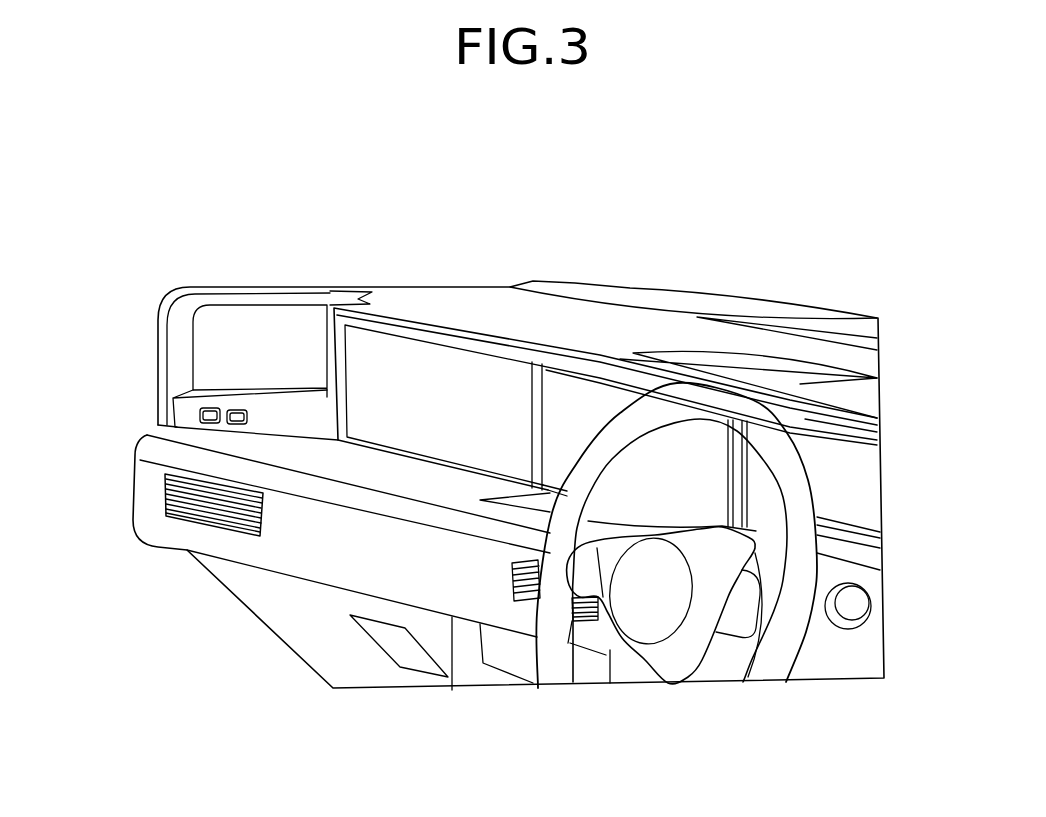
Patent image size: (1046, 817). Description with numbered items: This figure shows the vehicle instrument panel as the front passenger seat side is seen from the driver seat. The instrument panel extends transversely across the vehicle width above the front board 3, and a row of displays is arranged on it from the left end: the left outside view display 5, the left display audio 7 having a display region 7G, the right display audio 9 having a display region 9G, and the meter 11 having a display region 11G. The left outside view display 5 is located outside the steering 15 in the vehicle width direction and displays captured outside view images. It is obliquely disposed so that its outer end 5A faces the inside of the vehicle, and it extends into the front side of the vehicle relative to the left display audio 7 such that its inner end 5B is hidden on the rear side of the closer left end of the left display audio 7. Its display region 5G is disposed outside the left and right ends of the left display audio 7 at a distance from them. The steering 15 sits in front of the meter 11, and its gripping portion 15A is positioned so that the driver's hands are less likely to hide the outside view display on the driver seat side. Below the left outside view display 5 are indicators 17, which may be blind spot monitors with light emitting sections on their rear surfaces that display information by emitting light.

The front board 3 is at (380, 476).
The left outside view display 5 is at (463, 274).
The outer end 5A is at (175, 352).
The inner end 5B is at (343, 297).
The display region 5G is at (278, 349).
The left display audio 7 is at (605, 326).
The display region 7G is at (477, 397).
The right display audio 9 is at (704, 329).
The display region 9G is at (578, 427).
The meter 11 is at (874, 338).
The display region 11G is at (845, 488).
The steering 15 is at (701, 480).
The gripping portion 15A is at (787, 627).
The indicators 17 is at (200, 413).